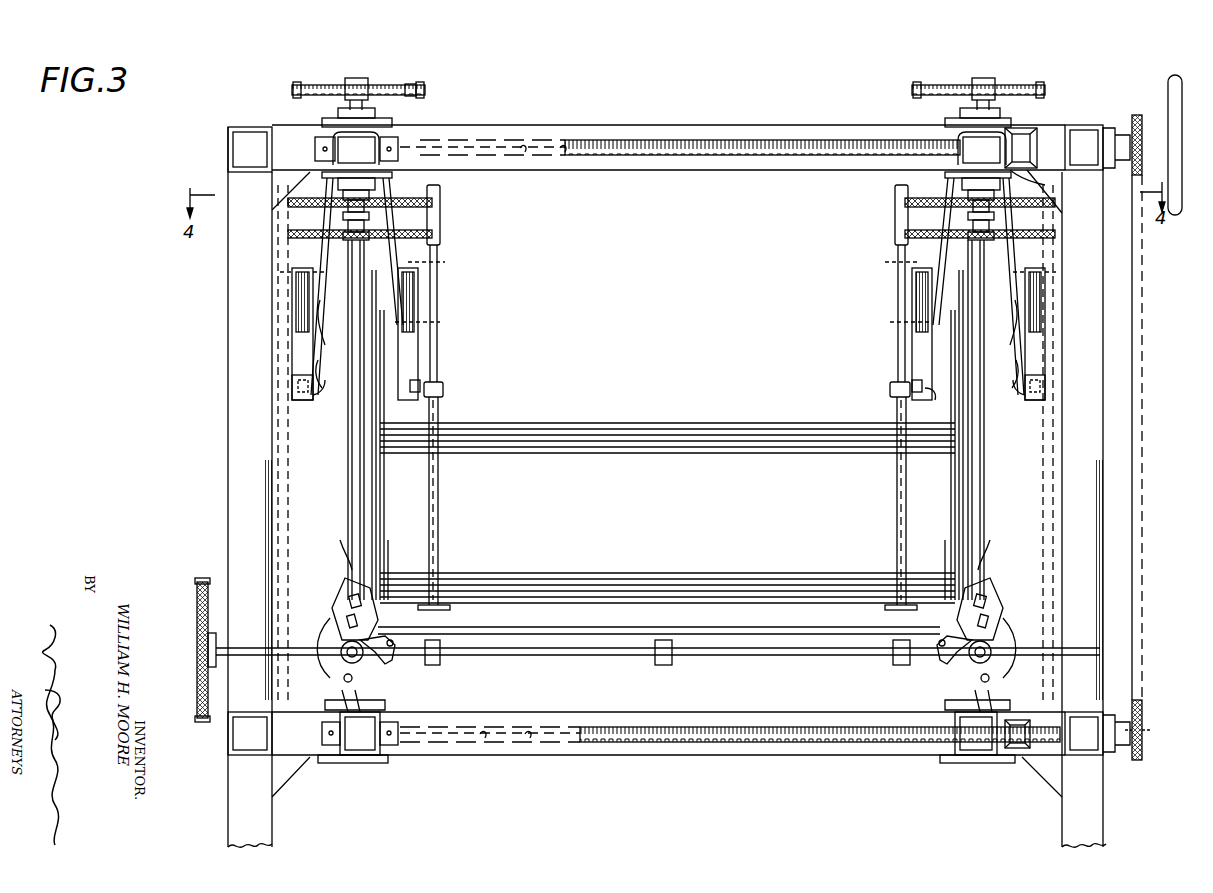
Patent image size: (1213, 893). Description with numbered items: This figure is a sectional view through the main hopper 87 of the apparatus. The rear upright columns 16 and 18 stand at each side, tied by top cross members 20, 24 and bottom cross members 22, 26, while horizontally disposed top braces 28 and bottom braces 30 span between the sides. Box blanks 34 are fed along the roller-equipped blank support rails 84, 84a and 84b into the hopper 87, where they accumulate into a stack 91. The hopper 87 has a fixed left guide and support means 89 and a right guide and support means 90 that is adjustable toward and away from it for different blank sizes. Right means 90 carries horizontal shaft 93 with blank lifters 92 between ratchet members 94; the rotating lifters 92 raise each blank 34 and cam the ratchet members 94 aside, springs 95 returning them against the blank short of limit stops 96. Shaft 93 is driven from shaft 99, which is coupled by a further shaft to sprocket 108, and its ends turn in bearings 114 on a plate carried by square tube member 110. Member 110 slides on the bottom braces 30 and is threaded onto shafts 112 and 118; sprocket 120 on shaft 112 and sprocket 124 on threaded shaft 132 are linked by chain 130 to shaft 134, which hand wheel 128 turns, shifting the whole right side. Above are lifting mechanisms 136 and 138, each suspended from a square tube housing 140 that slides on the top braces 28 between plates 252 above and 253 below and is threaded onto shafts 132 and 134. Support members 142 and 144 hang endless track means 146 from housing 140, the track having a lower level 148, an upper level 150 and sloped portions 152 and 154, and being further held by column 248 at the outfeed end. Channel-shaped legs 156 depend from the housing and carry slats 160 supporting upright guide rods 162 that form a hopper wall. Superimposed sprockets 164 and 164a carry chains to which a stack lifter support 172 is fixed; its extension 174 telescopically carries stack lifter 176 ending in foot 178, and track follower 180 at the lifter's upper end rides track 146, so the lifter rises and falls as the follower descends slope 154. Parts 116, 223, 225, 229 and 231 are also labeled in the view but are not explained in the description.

The left upright frame post 16 is at (228, 448).
The right upright frame post 18 is at (1100, 430).
The upper right bearing block 20 is at (1085, 125).
The lower right bearing block 22 is at (1096, 710).
The upper left bearing block 24 is at (228, 145).
The lower left bearing block 26 is at (254, 760).
The upper horizontal beam 28 is at (548, 127).
The lower horizontal beam 30 is at (618, 740).
The connecting rod 34 is at (502, 635).
The rod bracket 84 is at (435, 665).
The rod bracket 84a is at (672, 665).
The rod bracket 84b is at (893, 660).
The loom mechanism 87 is at (707, 380).
The left mechanism side 89 is at (447, 322).
The right mechanism side 90 is at (893, 322).
The horizontal guide bars 91 is at (800, 422).
The latch link 92 is at (943, 675).
The pivot pin 93 is at (990, 642).
The lever 94 is at (990, 592).
The arc of movement 95 is at (1000, 658).
The slide bar 96 is at (996, 566).
The drive rod 99 is at (755, 655).
The hand wheel 108 is at (197, 633).
The lower bearing housing 110 is at (982, 755).
The lower rack 112 is at (837, 743).
The spring 114 is at (1000, 678).
The base plate 116 is at (1010, 700).
The lower shaft 118 is at (500, 748).
The lower sprocket 120 is at (1142, 720).
The chain 124 is at (1137, 116).
The handle 128 is at (1182, 108).
The chain return run 130 is at (1142, 565).
The upper rack 132 is at (738, 140).
The upper shaft 134 is at (548, 152).
The left unit 136 is at (455, 268).
The right unit 138 is at (885, 268).
The upper bearing 140 is at (965, 125).
The inclined leg 142 is at (1020, 258).
The guide 144 is at (1007, 344).
The lower guide 146 is at (1027, 401).
The stop block 148 is at (905, 392).
The outer bracket top 150 is at (1040, 272).
The inner bracket 152 is at (920, 298).
The outer bracket 154 is at (1035, 312).
The spindle bar 156 is at (973, 434).
The spindle bar 160 is at (984, 440).
The spindle bar 162 is at (960, 502).
The cross bar 164 is at (905, 205).
The lower cross bar 164a is at (915, 237).
The rod cap 172 is at (897, 195).
The upper rod 174 is at (900, 340).
The lower rod 176 is at (897, 510).
The rod foot 178 is at (885, 608).
The collar 180 is at (921, 398).
The crank hub 223 is at (984, 85).
The crank arm 225 is at (917, 88).
The crank arm 229 is at (378, 85).
The crank end 231 is at (420, 88).
The cam 248 is at (1013, 557).
The coupling 252 is at (1020, 130).
The coupling bracket 253 is at (1030, 168).